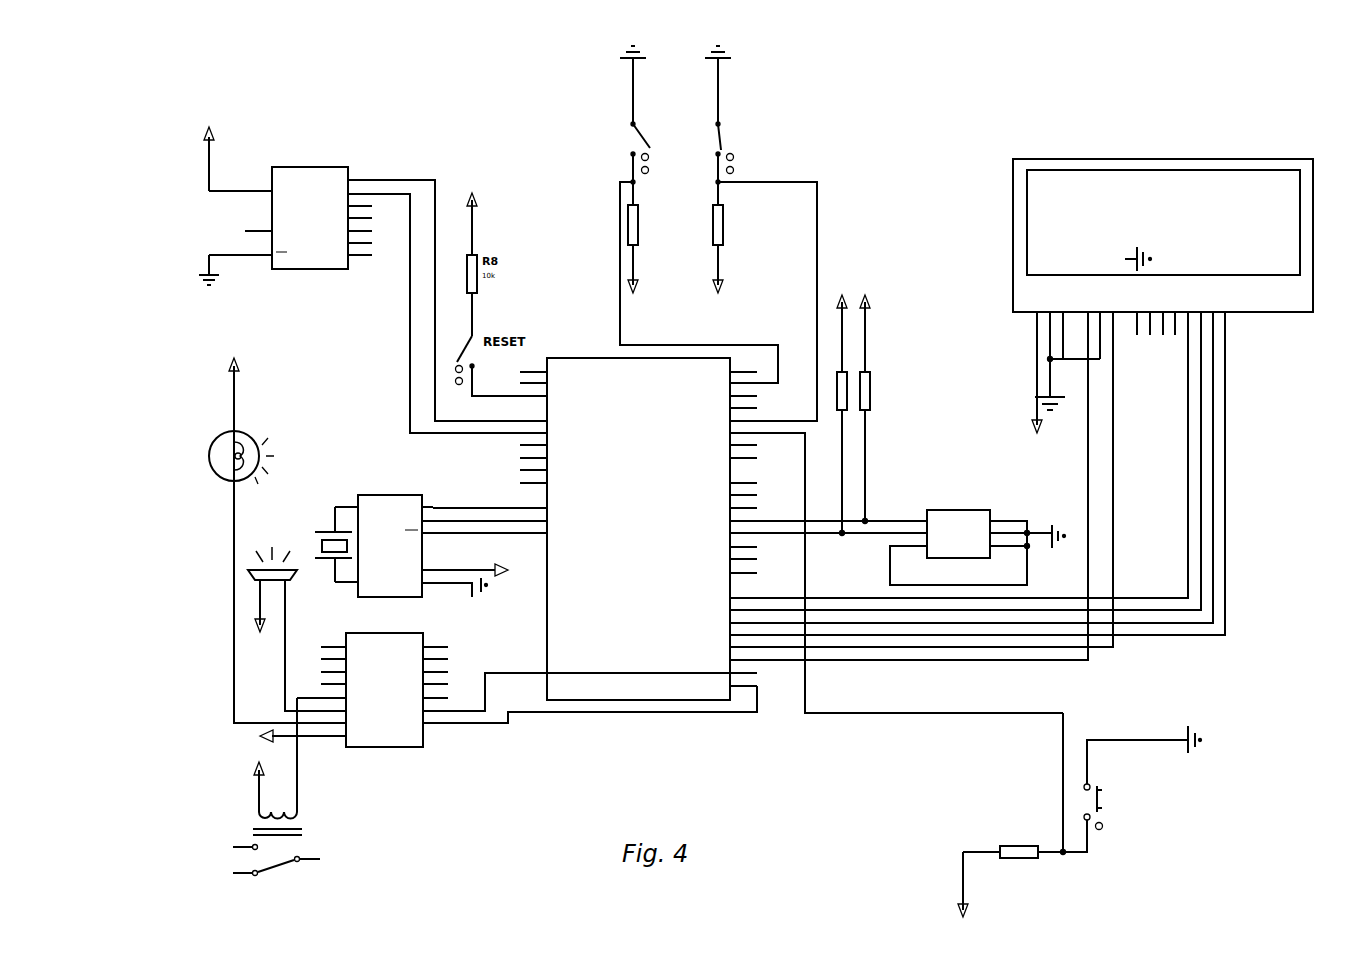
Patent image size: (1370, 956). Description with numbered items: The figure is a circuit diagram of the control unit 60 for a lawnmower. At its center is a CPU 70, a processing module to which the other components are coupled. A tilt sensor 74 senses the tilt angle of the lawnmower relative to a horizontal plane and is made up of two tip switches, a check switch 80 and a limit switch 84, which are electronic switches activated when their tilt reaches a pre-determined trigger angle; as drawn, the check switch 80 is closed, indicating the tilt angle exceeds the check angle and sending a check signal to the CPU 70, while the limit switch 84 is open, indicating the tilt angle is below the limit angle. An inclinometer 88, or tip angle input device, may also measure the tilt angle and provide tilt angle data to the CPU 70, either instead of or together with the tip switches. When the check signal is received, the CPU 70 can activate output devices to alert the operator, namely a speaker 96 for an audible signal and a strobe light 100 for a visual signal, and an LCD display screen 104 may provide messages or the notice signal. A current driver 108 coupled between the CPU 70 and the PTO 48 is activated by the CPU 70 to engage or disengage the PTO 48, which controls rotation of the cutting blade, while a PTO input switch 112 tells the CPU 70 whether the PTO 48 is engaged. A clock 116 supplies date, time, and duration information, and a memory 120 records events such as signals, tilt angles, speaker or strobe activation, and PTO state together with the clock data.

The PTO 48 is at (300, 853).
The control unit 60 is at (948, 148).
The CPU 70 is at (590, 334).
The tilt sensor 74 is at (752, 70).
The check switch 80 is at (720, 124).
The limit switch 84 is at (633, 124).
The inclinometer 88 is at (272, 180).
The speaker 96 is at (250, 578).
The strobe light 100 is at (245, 432).
The LCD display screen 104 is at (1013, 215).
The current driver 108 is at (415, 750).
The PTO input switch 112 is at (1105, 810).
The clock 116 is at (400, 495).
The memory 120 is at (990, 510).